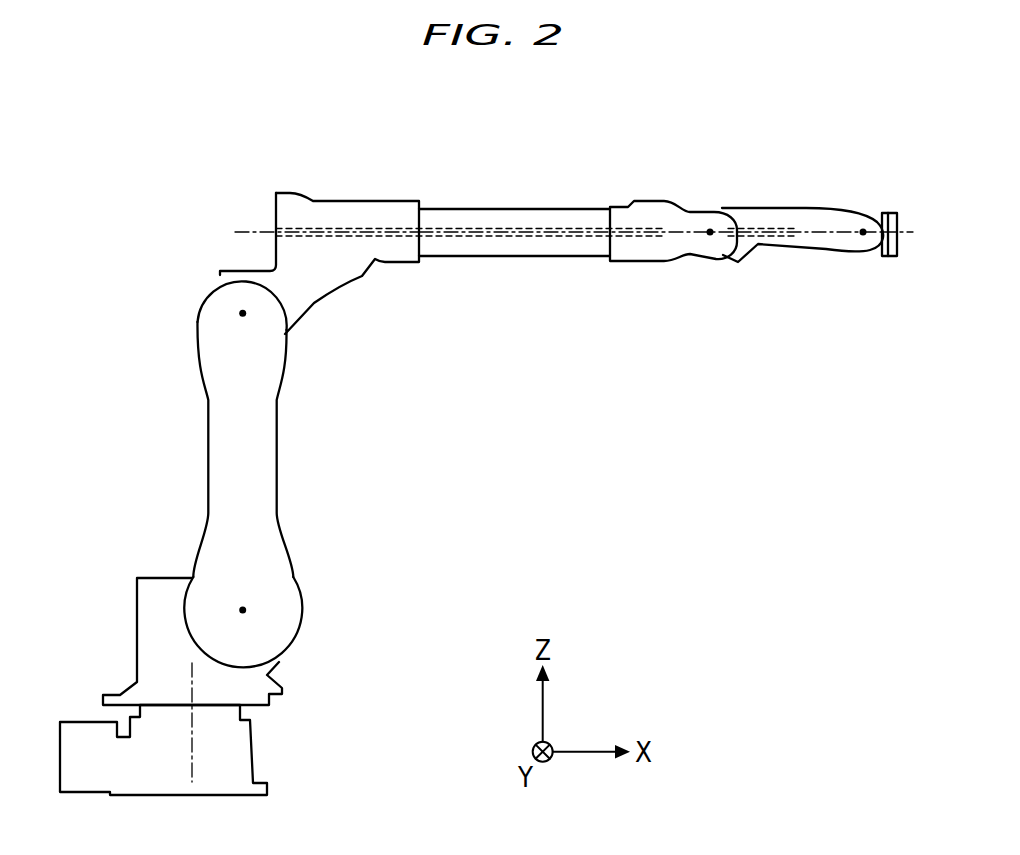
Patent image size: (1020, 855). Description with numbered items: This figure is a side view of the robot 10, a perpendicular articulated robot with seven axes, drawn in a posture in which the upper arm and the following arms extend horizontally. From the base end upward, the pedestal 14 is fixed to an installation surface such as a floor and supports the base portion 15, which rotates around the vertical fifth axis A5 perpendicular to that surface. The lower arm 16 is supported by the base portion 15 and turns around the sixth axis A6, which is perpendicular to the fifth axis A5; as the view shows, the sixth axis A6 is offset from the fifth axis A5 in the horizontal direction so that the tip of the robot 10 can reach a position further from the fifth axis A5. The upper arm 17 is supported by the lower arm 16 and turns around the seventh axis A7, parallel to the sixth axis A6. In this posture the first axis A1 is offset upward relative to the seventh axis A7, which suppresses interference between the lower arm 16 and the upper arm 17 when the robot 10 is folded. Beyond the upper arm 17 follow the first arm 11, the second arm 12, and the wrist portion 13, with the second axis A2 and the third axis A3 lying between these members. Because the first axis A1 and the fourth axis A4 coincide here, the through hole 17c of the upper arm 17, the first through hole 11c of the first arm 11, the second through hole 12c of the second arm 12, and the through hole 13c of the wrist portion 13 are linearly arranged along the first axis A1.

The robot 10 is at (186, 170).
The first arm 11 is at (515, 220).
The first through hole 11c is at (515, 237).
The second arm 12 is at (806, 213).
The second through hole 12c is at (758, 227).
The wrist portion 13 is at (893, 213).
The through hole 13c is at (885, 257).
The pedestal 14 is at (212, 765).
The base portion 15 is at (157, 628).
The lower arm 16 is at (230, 445).
The upper arm 17 is at (333, 213).
The through hole 17c is at (362, 228).
The first axis A1 is at (381, 233).
The second axis A2 is at (710, 234).
The third axis A3 is at (863, 234).
The fourth axis A4 is at (398, 312).
The fifth axis A5 is at (190, 753).
The sixth axis A6 is at (243, 610).
The seventh axis A7 is at (242, 313).